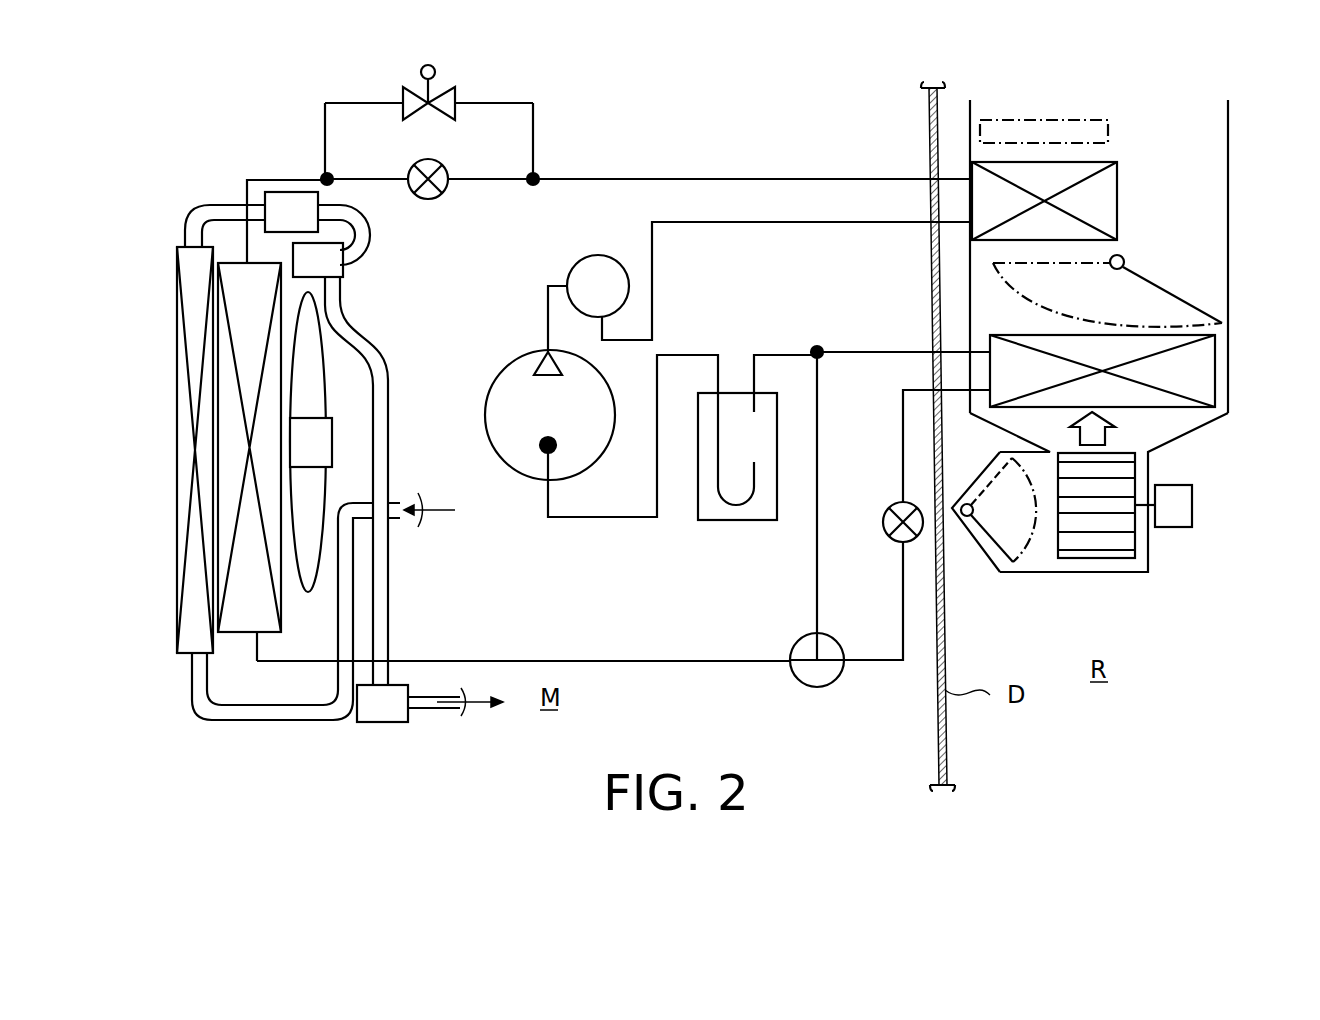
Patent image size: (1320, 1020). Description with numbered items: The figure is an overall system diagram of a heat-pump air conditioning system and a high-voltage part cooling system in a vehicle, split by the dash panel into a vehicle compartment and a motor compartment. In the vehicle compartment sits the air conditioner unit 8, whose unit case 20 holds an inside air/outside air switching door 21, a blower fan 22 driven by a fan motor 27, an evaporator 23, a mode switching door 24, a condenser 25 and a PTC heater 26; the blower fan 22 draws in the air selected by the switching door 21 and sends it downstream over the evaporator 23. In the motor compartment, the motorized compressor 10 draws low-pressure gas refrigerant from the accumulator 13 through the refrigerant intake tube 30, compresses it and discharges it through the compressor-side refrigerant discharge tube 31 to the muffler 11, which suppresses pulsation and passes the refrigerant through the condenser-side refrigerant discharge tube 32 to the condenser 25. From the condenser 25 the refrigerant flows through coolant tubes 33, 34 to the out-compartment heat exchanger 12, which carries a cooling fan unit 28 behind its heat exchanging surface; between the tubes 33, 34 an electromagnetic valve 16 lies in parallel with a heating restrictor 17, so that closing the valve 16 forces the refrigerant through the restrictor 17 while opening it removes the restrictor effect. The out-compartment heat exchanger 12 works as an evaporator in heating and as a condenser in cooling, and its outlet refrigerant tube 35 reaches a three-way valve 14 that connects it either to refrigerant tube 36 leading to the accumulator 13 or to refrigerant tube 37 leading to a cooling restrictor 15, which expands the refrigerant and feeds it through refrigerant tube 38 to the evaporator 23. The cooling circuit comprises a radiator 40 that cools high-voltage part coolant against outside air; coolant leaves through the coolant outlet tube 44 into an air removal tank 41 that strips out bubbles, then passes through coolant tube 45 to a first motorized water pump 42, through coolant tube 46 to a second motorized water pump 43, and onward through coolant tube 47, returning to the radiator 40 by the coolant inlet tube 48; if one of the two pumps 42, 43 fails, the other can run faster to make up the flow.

The air conditioner unit 8 is at (1218, 430).
The motorized compressor 10 is at (500, 370).
The muffler 11 is at (587, 258).
The out-compartment heat exchanger 12 is at (236, 633).
The accumulator 13 is at (732, 521).
The three-way valve 14 is at (817, 687).
The cooling restrictor 15 is at (888, 533).
The electromagnetic valve 16 is at (450, 82).
The heating restrictor 17 is at (446, 166).
The unit case 20 is at (1229, 245).
The inside air/outside air switching door 21 is at (1001, 534).
The blower fan 22 is at (1100, 508).
The evaporator 23 is at (1195, 372).
The mode switching door 24 is at (1173, 292).
The condenser 25 is at (1117, 196).
The PTC heater 26 is at (1108, 115).
The fan motor 27 is at (1172, 528).
The cooling fan unit 28 is at (327, 397).
The refrigerant intake tube 30 is at (605, 518).
The compressor-side refrigerant discharge tube 31 is at (547, 317).
The condenser-side refrigerant discharge tube 32 is at (775, 224).
The coolant tube 33 is at (706, 177).
The coolant tube 34 is at (264, 178).
The refrigerant tube 35 is at (645, 658).
The refrigerant tube 36 is at (815, 569).
The refrigerant tube 37 is at (903, 628).
The refrigerant tube 38 is at (900, 424).
The radiator 40 is at (177, 462).
The air removal tank 41 is at (295, 207).
The first motorized water pump 42 is at (330, 267).
The second motorized water pump 43 is at (383, 700).
The coolant outlet tube 44 is at (188, 207).
The coolant tube 45 is at (372, 230).
The coolant tube 46 is at (388, 451).
The coolant tube 47 is at (432, 714).
The coolant inlet tube 48 is at (275, 721).